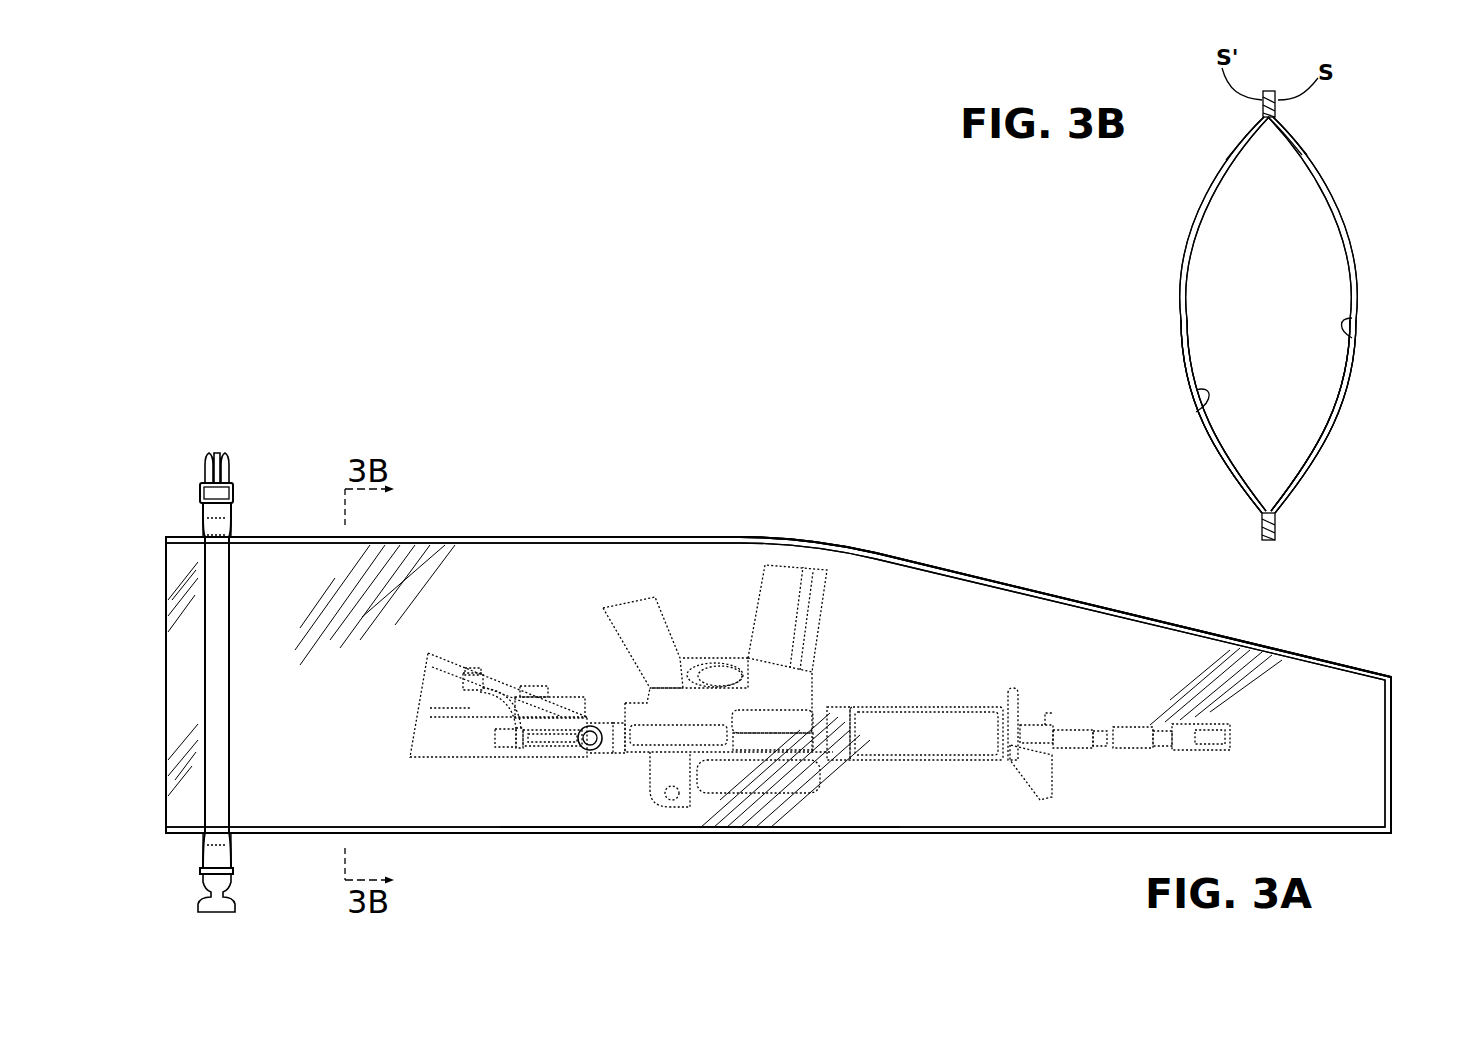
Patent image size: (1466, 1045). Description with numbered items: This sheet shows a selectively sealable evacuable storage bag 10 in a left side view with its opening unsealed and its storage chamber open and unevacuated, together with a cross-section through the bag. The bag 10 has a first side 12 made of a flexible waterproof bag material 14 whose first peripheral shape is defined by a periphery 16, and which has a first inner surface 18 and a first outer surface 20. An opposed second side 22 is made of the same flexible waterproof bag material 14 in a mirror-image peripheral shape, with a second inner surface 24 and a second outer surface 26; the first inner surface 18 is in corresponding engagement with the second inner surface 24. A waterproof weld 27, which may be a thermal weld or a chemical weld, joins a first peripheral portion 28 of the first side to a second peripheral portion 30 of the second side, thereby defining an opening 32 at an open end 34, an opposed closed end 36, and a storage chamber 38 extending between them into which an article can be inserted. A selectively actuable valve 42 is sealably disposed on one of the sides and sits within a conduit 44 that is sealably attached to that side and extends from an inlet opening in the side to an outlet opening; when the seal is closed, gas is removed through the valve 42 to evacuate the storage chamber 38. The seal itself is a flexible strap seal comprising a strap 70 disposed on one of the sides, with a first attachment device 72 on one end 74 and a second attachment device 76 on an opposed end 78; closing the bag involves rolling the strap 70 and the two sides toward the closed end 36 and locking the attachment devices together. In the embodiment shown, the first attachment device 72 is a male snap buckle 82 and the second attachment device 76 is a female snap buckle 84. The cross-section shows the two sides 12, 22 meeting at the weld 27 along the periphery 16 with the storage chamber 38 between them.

In FIG. 3A, the selectively sealable evacuable storage bag 10 is at (1010, 510).
In FIG. 3B, the selectively sealable evacuable storage bag 10 is at (1357, 186).
In FIG. 3B, the first side 12 is at (1346, 214).
In FIG. 3A, the flexible waterproof bag material 14 is at (993, 630).
In FIG. 3B, the flexible waterproof bag material 14 is at (1186, 266).
In FIG. 3A, the periphery 16 is at (555, 536).
In FIG. 3B, the periphery 16 is at (1267, 90).
In FIG. 3B, the first inner surface 18 is at (1352, 336).
In FIG. 3B, the first outer surface 20 is at (1350, 390).
In FIG. 3A, the second side 22 is at (893, 607).
In FIG. 3B, the second side 22 is at (1200, 204).
In FIG. 3B, the second inner surface 24 is at (1200, 402).
In FIG. 3B, the second outer surface 26 is at (1181, 334).
In FIG. 3A, the waterproof weld 27 is at (513, 832).
In FIG. 3B, the waterproof weld 27 is at (1277, 105).
In FIG. 3B, the first peripheral portion 28 is at (1278, 119).
In FIG. 3A, the second peripheral portion 30 is at (608, 833).
In FIG. 3B, the second peripheral portion 30 is at (1262, 107).
In FIG. 3A, the opening 32 is at (166, 586).
In FIG. 3A, the open end 34 is at (174, 535).
In FIG. 3A, the closed end 36 is at (1391, 722).
In FIG. 3B, the storage chamber 38 is at (1263, 297).
In FIG. 3A, the selectively actuable valve 42 is at (497, 738).
In FIG. 3A, the conduit 44 is at (560, 753).
In FIG. 3A, the strap 70 is at (202, 696).
In FIG. 3A, the first attachment device 72 is at (270, 464).
In FIG. 3A, the one end 74 is at (234, 508).
In FIG. 3A, the second attachment device 76 is at (177, 909).
In FIG. 3A, the opposed end 78 is at (234, 855).
In FIG. 3A, the male snap buckle 82 is at (235, 456).
In FIG. 3A, the female snap buckle 84 is at (216, 914).